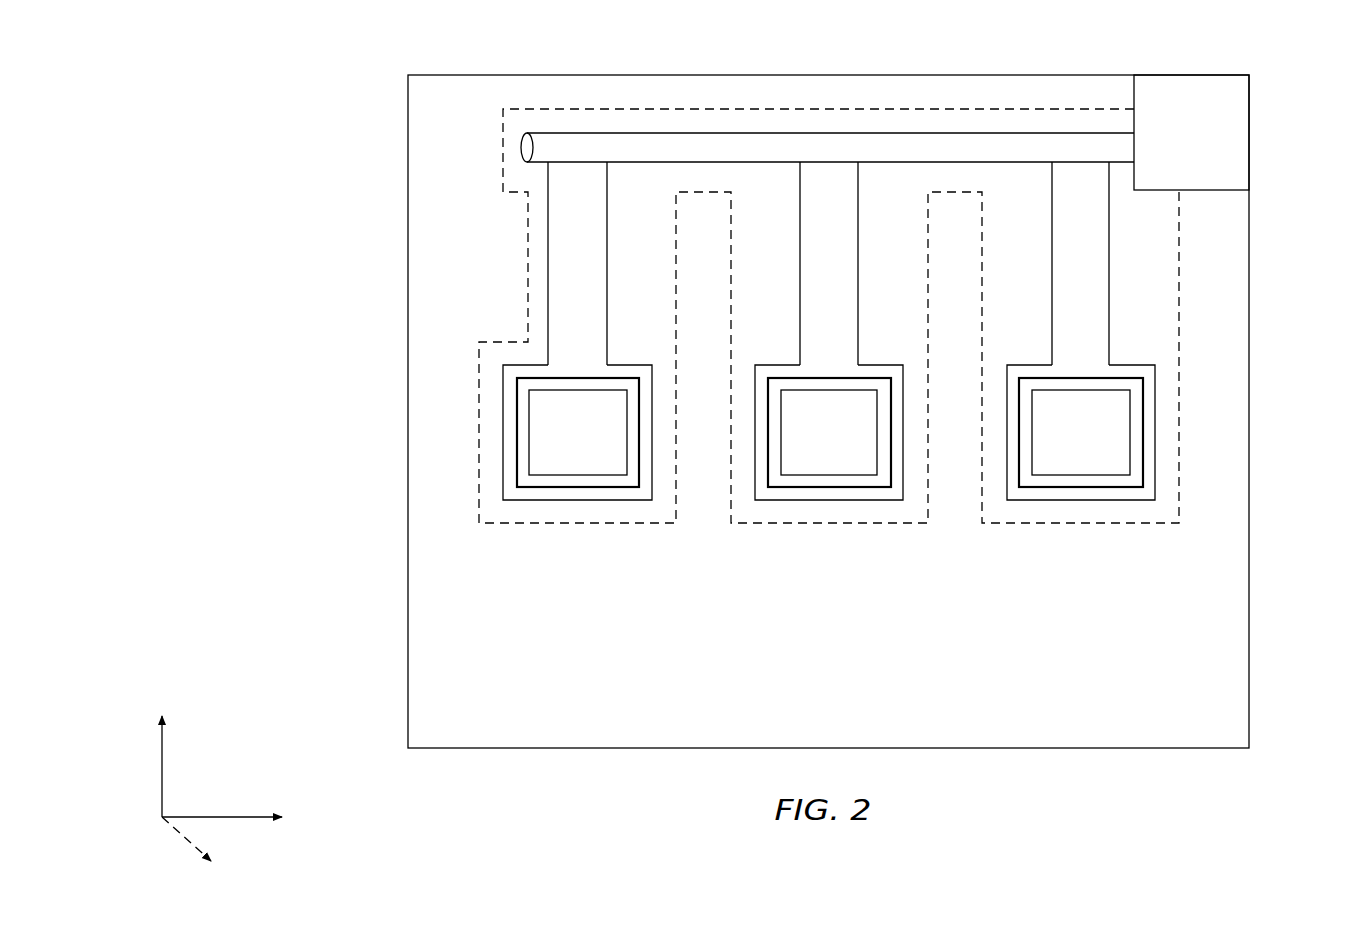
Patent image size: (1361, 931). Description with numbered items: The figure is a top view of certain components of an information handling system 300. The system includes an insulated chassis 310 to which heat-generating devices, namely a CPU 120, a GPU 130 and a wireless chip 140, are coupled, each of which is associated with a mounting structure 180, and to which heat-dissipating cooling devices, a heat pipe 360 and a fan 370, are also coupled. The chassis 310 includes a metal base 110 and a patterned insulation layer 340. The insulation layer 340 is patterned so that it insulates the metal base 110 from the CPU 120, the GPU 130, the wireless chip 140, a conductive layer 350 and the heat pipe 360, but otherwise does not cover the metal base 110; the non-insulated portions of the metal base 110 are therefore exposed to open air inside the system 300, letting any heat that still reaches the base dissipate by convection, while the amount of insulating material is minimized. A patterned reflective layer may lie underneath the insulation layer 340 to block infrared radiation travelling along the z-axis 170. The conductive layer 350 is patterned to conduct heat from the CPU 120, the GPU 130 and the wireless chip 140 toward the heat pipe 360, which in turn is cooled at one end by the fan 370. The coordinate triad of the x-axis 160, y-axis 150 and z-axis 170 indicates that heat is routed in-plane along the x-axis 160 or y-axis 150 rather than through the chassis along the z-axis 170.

The information handling system 300 is at (320, 113).
The metal base 110 is at (1249, 620).
The insulated chassis 310 is at (813, 682).
The fan 370 is at (1176, 149).
The heat pipe 360 is at (847, 133).
The insulation layer 340 is at (633, 525).
The conductive layer 350 is at (607, 213).
The mounting structure 180 is at (517, 400).
The central processing unit 120 is at (560, 461).
The graphics processing unit 130 is at (812, 461).
The wireless chip 140 is at (1065, 468).
The y-axis 150 is at (162, 758).
The x-axis 160 is at (217, 815).
The z-axis 170 is at (190, 843).